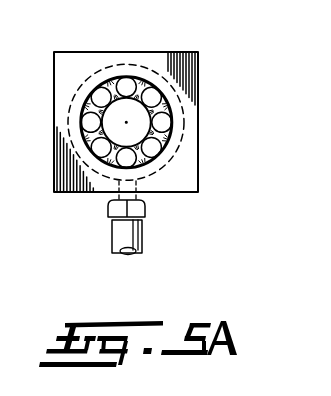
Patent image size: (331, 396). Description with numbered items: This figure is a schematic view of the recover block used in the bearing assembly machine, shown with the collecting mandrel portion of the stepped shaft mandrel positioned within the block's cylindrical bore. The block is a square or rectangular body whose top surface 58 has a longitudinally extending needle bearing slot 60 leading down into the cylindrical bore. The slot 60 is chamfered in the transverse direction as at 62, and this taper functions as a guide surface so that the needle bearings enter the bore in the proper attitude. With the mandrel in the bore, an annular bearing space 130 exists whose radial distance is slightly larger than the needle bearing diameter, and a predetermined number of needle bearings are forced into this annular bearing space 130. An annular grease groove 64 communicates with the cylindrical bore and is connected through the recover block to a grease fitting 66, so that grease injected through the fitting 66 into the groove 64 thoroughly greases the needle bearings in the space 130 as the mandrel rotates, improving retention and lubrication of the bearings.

The top surface 58 is at (183, 52).
The needle bearing slot 60 is at (118, 76).
The transverse chamfer 62 is at (136, 64).
The annular bearing space 130 is at (163, 153).
The annular grease groove 64 is at (150, 195).
The grease fitting 66 is at (137, 253).